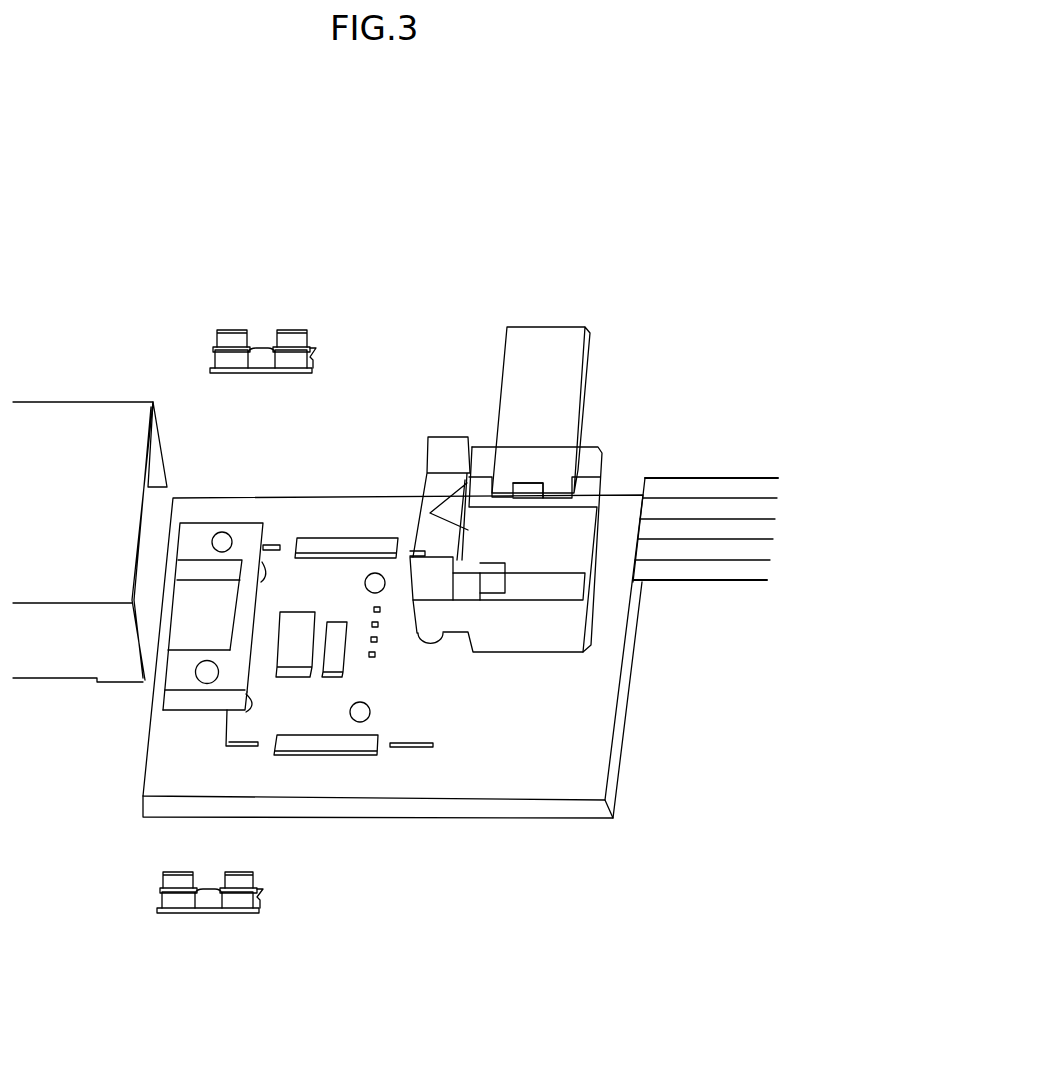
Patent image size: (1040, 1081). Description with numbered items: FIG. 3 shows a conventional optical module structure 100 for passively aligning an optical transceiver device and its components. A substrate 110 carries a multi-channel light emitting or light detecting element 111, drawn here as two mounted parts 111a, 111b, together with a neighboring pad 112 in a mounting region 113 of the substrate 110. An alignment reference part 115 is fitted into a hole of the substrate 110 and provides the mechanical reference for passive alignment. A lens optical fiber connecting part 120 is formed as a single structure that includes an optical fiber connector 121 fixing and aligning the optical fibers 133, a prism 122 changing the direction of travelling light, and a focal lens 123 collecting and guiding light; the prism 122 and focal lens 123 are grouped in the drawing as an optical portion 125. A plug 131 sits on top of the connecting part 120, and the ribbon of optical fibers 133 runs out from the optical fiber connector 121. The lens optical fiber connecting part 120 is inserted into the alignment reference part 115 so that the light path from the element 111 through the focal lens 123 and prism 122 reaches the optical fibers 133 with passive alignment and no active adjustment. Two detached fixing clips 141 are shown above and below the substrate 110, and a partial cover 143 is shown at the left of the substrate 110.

The optical connector assembly 100 is at (620, 278).
The substrate 110 is at (620, 781).
The multi-channel light emitting or light detecting element 111 is at (475, 660).
The first electronic component 111a is at (382, 653).
The second electronic component 111b is at (405, 677).
The terminal pad 112 is at (354, 668).
The mounting portion 113 is at (557, 670).
The alignment reference part 115 is at (212, 528).
The lens optical fiber connecting part 120 is at (600, 592).
The optical fiber connector 121 is at (522, 537).
The prism 122 is at (428, 533).
The focal lens 123 is at (439, 540).
The locking portion 125 is at (424, 452).
The plug 131 is at (572, 376).
The optical fibers 133 is at (726, 497).
The fixing clip 141 is at (229, 341).
The cover 143 is at (65, 667).